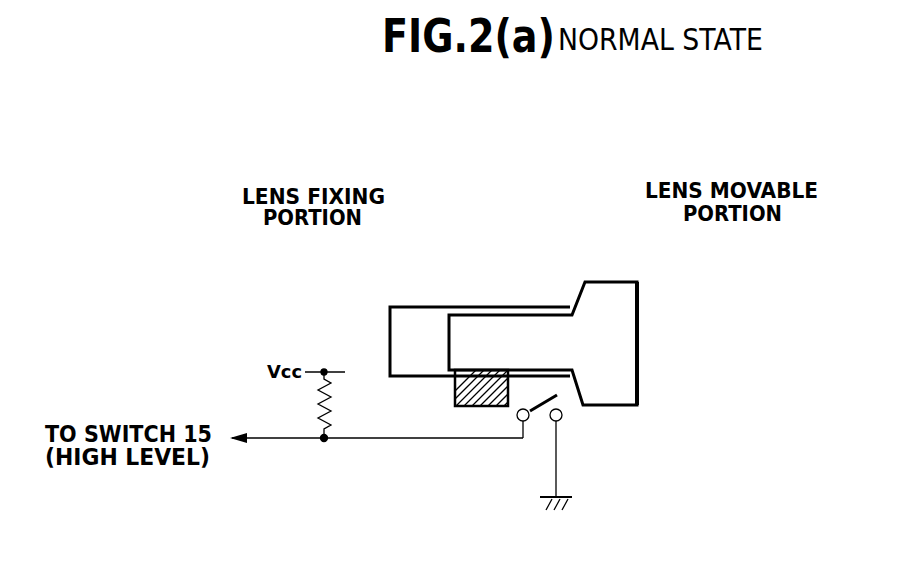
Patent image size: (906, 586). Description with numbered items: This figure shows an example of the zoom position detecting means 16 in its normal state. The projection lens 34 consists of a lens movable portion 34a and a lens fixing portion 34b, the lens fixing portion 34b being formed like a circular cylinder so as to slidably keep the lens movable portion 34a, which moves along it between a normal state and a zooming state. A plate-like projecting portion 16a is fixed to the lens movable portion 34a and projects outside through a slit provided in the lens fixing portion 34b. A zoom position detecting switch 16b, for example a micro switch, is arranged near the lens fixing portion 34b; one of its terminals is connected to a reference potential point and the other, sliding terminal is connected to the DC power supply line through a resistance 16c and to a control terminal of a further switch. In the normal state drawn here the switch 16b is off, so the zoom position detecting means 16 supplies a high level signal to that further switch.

The projection lens 34 is at (513, 254).
The lens movable portion 34a is at (608, 288).
The lens fixing portion 34b is at (430, 305).
The zoom position detecting means 16 is at (449, 439).
The projecting portion 16a is at (472, 407).
The zoom position detecting switch 16b is at (537, 420).
The resistance 16c is at (306, 403).